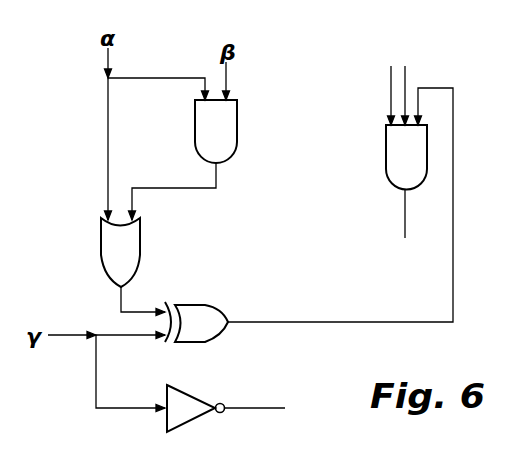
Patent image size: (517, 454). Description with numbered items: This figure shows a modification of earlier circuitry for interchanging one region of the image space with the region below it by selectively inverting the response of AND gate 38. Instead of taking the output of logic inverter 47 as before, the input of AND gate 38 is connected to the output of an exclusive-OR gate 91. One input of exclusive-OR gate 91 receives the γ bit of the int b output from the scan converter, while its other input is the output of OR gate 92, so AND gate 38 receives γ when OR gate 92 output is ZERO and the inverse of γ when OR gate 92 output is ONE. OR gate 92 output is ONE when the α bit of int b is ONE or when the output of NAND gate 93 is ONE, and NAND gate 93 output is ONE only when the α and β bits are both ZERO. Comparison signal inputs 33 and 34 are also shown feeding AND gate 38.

The NAND gate 93 is at (237, 151).
The OR gate 92 is at (140, 246).
The exclusive-OR gate 91 is at (215, 305).
The logic inverter 47 is at (207, 397).
The AND gate 38 is at (386, 176).
The greater-than-or-equal comparison signal input 33 is at (386, 68).
The less-than comparison signal input 34 is at (415, 68).